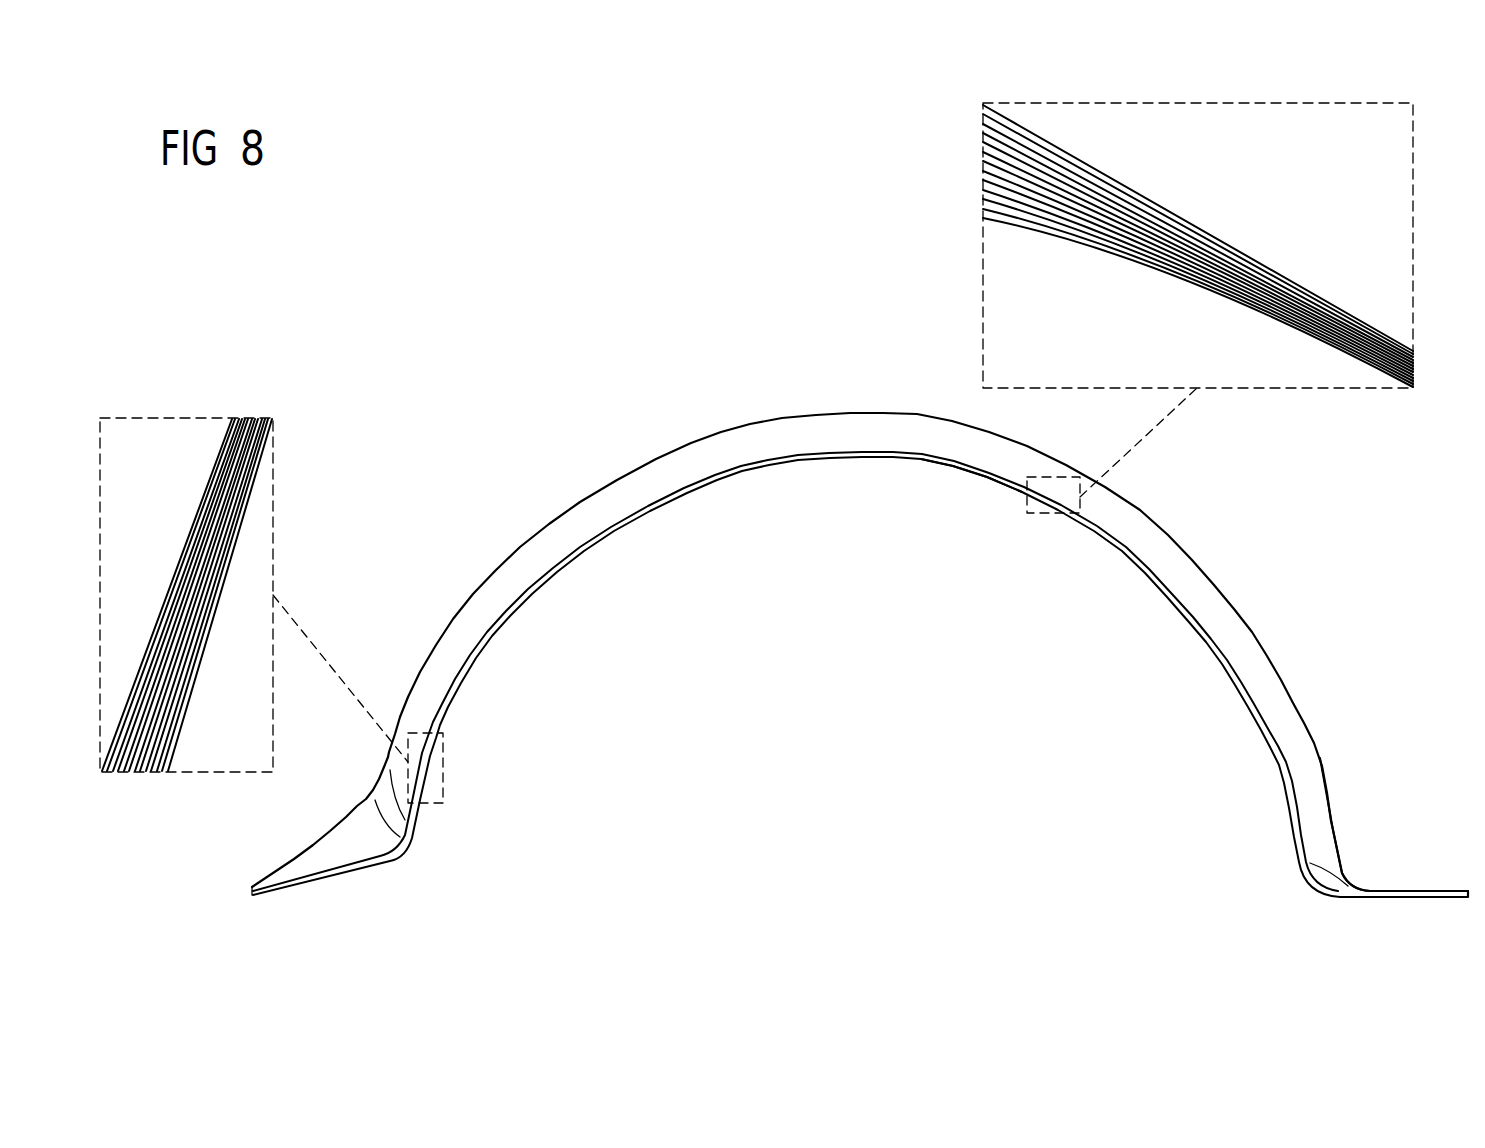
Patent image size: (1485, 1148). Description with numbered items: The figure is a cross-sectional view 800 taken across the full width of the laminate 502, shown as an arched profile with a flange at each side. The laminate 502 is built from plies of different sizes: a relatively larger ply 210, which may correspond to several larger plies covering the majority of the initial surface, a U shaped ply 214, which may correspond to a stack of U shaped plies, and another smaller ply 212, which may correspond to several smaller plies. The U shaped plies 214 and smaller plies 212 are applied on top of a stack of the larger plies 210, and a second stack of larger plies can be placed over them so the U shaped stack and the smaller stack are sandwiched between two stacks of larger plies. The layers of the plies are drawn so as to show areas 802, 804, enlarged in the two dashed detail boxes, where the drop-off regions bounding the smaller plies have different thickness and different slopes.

The cross-sectional view 800 is at (652, 346).
The laminate 502 is at (953, 455).
The larger ply 210 is at (855, 455).
The U shaped ply 214 is at (977, 470).
The smaller ply 212 is at (1295, 805).
The area with different thickness and slope 802 is at (1033, 514).
The area with different thickness and slope 804 is at (443, 759).